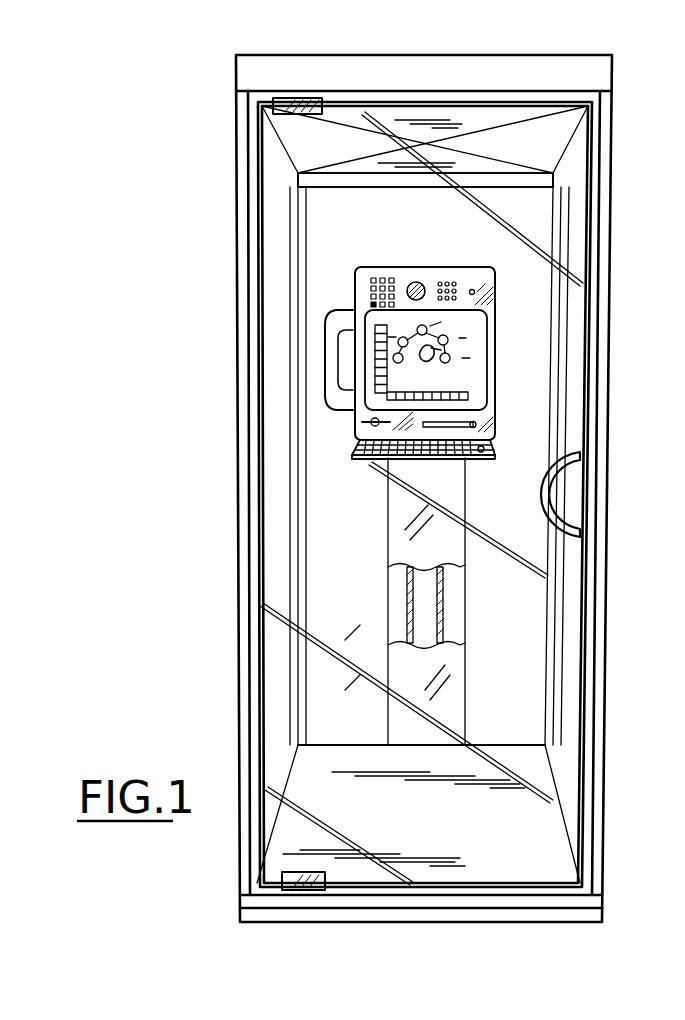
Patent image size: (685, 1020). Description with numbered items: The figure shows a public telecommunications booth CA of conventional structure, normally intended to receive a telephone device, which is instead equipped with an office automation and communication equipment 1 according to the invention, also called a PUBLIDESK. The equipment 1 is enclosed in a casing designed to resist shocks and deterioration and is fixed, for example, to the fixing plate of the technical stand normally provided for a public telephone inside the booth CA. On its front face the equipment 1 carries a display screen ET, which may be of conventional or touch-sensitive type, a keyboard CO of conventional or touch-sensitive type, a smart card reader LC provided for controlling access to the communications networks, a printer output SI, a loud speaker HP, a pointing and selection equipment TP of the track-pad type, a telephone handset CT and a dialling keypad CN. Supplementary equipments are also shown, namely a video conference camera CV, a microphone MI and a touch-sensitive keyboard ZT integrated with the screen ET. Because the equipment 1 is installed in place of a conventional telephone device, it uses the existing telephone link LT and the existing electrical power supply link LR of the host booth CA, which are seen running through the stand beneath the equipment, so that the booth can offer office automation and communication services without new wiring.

The office automation and communication equipment 1 is at (502, 302).
The telecommunications booth CA is at (616, 454).
The dialling keypad CN is at (378, 277).
The video conference camera CV is at (416, 282).
The loud speaker HP is at (447, 282).
The microphone MI is at (473, 290).
The display screen ET is at (476, 357).
The touch-sensitive keyboard ZT is at (376, 385).
The printer output SI is at (474, 425).
The telephone handset CT is at (333, 353).
The smart card reader LC is at (357, 428).
The keyboard CO is at (370, 462).
The pointing and selection equipment TP is at (482, 462).
The electrical power supply link LR is at (408, 598).
The telephone link LT is at (445, 608).